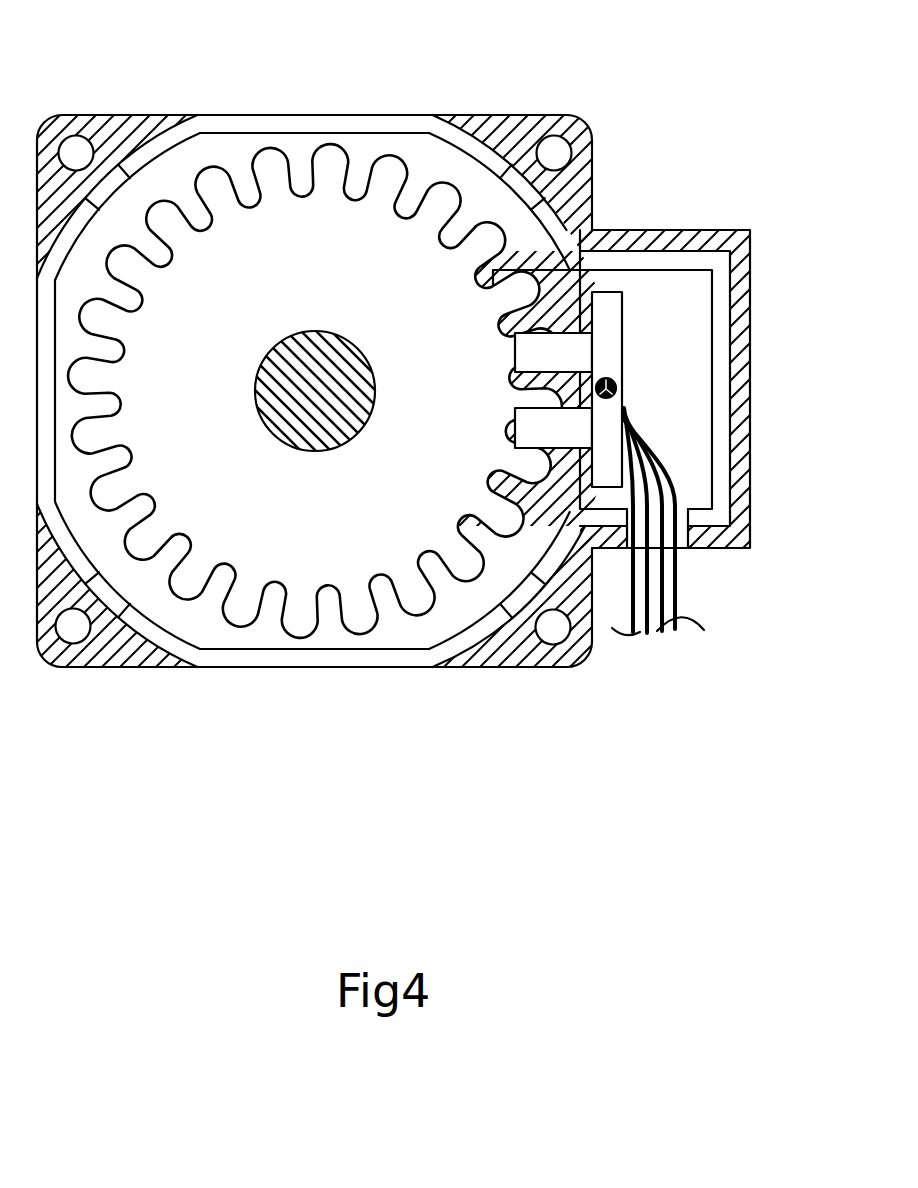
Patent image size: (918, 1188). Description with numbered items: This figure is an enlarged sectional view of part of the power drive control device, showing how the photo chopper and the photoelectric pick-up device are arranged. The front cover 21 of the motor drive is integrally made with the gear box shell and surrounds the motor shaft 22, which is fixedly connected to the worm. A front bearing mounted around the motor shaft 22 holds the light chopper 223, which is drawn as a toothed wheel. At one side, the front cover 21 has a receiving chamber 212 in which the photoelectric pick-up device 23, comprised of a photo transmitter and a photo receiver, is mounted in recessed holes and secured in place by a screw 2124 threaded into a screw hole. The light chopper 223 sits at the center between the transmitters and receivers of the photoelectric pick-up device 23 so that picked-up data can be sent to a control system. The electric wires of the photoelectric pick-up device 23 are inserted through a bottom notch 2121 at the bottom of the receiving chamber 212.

The front cover 21 is at (120, 667).
The receiving chamber 212 is at (696, 313).
The bottom notch 2121 is at (681, 546).
The screw 2124 is at (617, 392).
The motor shaft 22 is at (362, 363).
The light chopper 223 is at (358, 148).
The photoelectric pick-up device 23 is at (572, 350).